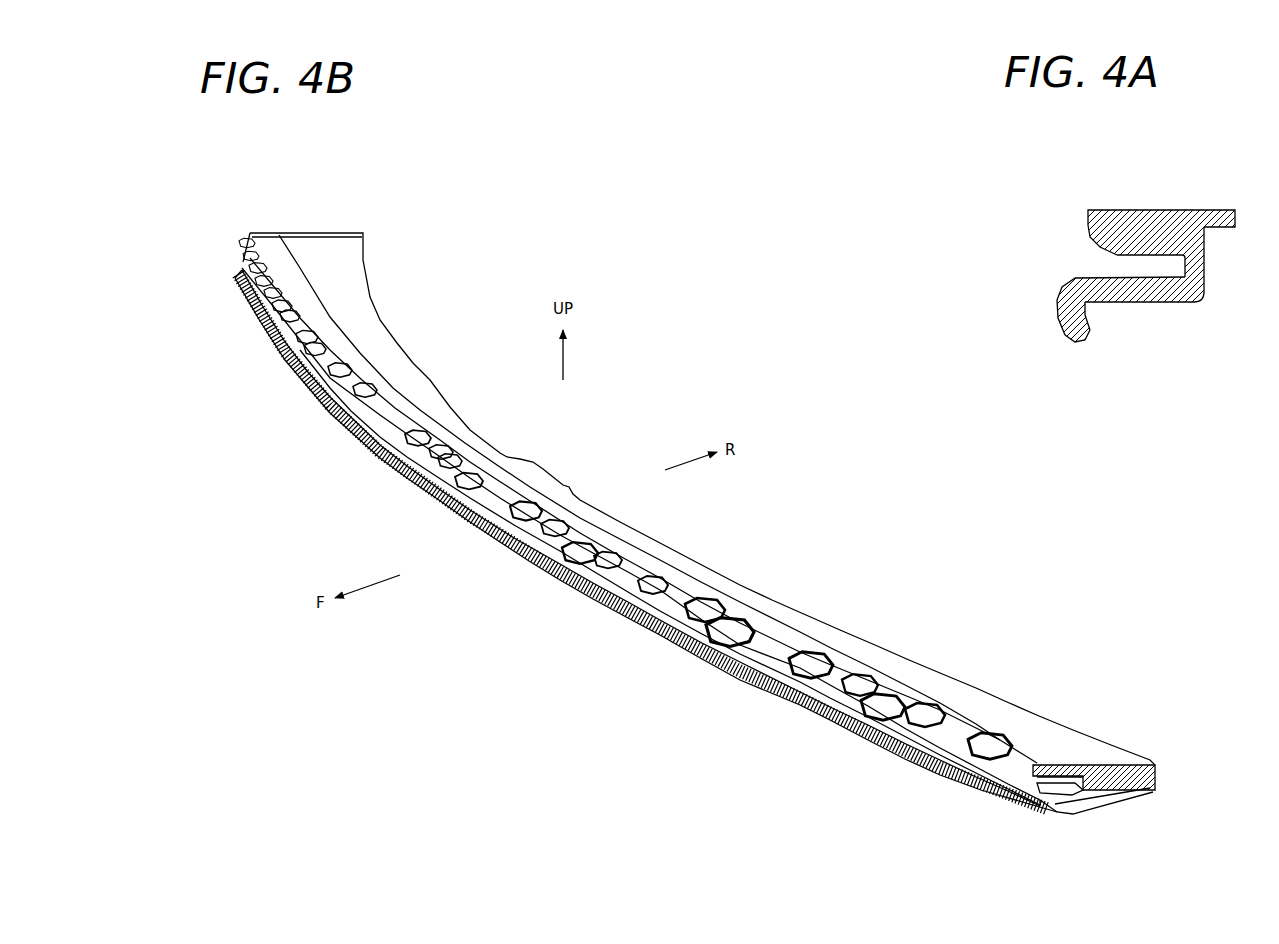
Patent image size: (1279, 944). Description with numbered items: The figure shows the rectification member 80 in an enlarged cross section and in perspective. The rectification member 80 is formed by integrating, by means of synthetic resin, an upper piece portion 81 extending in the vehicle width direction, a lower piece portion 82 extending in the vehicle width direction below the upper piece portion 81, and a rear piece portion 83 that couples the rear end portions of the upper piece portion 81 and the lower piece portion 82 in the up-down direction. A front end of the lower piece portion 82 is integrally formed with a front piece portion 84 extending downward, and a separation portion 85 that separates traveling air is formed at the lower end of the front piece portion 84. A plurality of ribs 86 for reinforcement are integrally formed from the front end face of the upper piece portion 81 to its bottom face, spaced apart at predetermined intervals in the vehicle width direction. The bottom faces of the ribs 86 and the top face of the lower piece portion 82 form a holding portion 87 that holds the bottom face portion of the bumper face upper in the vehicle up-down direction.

In FIG. 4B, the rectification member 80 is at (412, 325).
In FIG. 4A, the rectification member 80 is at (1089, 200).
In FIG. 4B, the upper piece portion 81 is at (440, 397).
In FIG. 4A, the upper piece portion 81 is at (1138, 210).
In FIG. 4B, the lower piece portion 82 is at (560, 548).
In FIG. 4A, the lower piece portion 82 is at (1133, 304).
In FIG. 4B, the rear piece portion 83 is at (1157, 770).
In FIG. 4A, the rear piece portion 83 is at (1205, 243).
In FIG. 4B, the front piece portion 84 is at (597, 597).
In FIG. 4A, the front piece portion 84 is at (1058, 313).
In FIG. 4A, the separation portion 85 is at (1082, 343).
In FIG. 4B, the rib 86 is at (305, 368).
In FIG. 4A, the rib 86 is at (1100, 243).
In FIG. 4B, the holding portion 87 is at (1122, 809).
In FIG. 4A, the holding portion 87 is at (1130, 306).